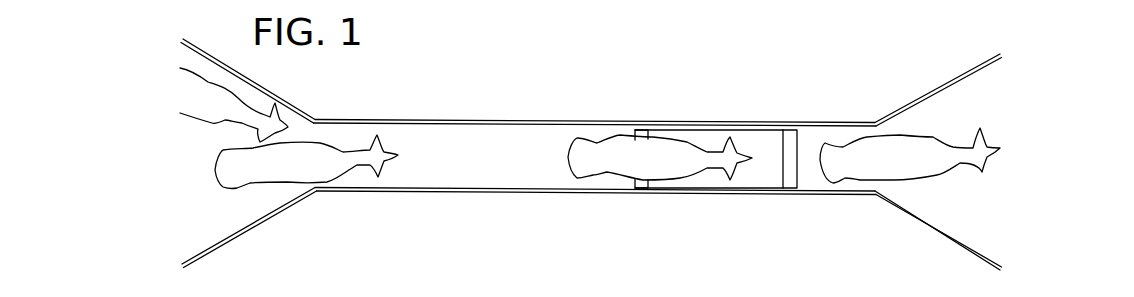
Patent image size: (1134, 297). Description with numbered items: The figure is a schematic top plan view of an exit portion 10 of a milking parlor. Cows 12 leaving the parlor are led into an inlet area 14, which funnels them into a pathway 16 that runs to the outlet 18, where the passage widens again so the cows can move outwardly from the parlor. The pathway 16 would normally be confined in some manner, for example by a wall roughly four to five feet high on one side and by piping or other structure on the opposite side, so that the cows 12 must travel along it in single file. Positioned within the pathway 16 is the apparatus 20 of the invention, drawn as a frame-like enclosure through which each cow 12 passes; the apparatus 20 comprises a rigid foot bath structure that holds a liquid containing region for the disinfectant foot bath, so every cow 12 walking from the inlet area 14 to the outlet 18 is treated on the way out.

The exit portion 10 is at (591, 154).
The cows 12 is at (280, 175).
The inlet area 14 is at (296, 100).
The pathway 16 is at (468, 147).
The outlet 18 is at (923, 227).
The apparatus 20 is at (763, 182).